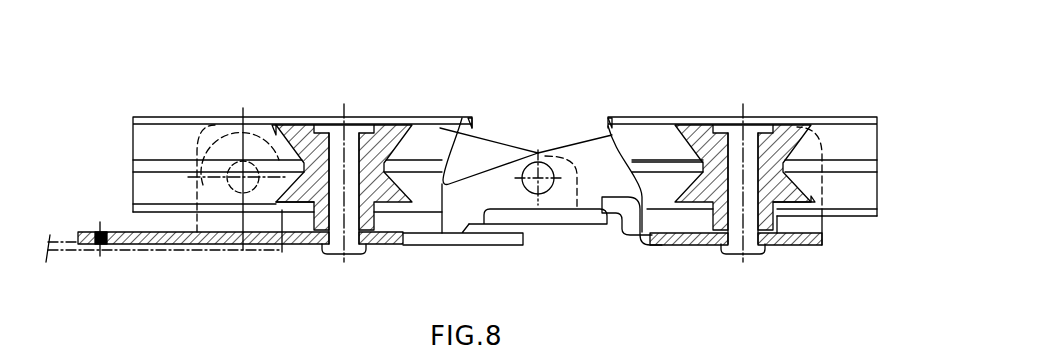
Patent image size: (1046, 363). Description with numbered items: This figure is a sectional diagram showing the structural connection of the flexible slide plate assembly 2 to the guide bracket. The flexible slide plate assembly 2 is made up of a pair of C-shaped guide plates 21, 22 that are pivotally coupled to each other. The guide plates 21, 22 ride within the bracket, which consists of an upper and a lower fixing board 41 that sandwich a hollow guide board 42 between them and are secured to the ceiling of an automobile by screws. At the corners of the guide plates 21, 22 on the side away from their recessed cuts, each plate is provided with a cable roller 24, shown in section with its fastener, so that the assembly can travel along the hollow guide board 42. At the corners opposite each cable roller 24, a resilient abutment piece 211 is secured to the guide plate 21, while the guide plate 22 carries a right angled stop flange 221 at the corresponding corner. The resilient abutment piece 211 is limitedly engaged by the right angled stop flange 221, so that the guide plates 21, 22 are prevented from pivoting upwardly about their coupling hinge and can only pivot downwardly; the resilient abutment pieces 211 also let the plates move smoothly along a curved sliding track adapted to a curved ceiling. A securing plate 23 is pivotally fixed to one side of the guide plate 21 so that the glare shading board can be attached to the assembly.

The flexible slide plate assembly 2 is at (508, 253).
The guide plate 21 is at (470, 150).
The guide plate 22 is at (593, 152).
The securing plate 23 is at (140, 238).
The cable roller 24 is at (392, 130).
The fixing board 41 is at (166, 207).
The hollow guide board 42 is at (183, 142).
The resilient abutment piece 211 is at (571, 230).
The right angled stop flange 221 is at (629, 217).